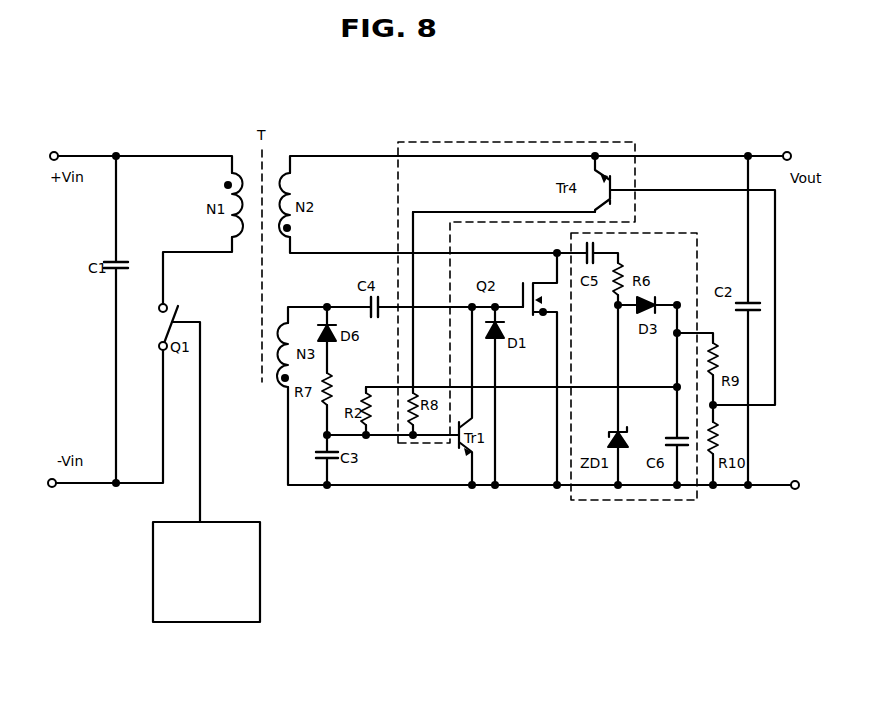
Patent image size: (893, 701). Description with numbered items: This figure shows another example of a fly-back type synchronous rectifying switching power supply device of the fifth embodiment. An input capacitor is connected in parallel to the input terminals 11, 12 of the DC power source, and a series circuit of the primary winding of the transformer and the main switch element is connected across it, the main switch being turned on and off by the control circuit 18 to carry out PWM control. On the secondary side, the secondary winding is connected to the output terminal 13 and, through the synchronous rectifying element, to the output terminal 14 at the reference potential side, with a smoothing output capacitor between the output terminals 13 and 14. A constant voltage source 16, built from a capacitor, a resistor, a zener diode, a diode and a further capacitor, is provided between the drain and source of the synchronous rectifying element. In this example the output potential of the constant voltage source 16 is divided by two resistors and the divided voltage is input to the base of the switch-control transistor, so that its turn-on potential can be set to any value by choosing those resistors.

The input terminal 11 is at (56, 151).
The input terminal 12 is at (52, 488).
The output terminal 13 is at (784, 152).
The output terminal 14 is at (794, 490).
The constant voltage source 16 is at (574, 500).
The control circuit 18 is at (230, 522).